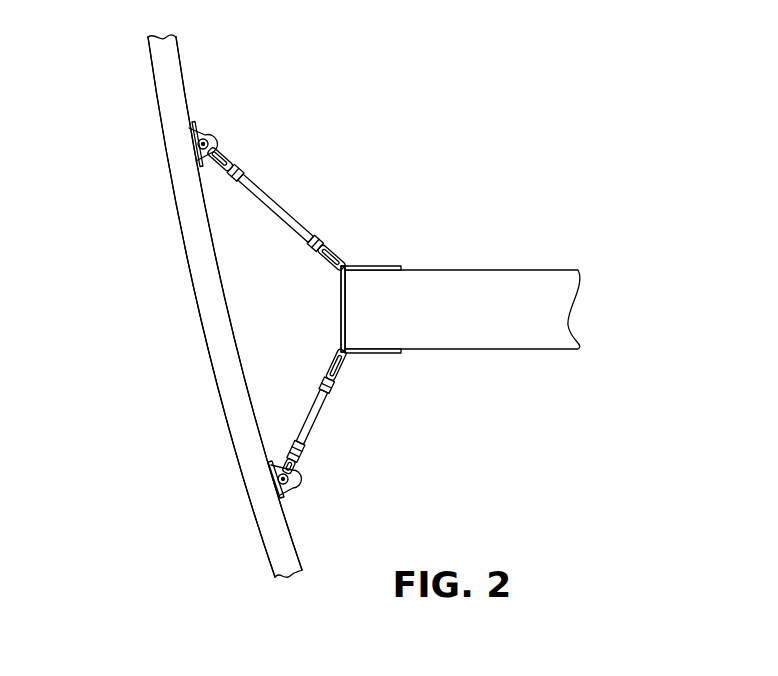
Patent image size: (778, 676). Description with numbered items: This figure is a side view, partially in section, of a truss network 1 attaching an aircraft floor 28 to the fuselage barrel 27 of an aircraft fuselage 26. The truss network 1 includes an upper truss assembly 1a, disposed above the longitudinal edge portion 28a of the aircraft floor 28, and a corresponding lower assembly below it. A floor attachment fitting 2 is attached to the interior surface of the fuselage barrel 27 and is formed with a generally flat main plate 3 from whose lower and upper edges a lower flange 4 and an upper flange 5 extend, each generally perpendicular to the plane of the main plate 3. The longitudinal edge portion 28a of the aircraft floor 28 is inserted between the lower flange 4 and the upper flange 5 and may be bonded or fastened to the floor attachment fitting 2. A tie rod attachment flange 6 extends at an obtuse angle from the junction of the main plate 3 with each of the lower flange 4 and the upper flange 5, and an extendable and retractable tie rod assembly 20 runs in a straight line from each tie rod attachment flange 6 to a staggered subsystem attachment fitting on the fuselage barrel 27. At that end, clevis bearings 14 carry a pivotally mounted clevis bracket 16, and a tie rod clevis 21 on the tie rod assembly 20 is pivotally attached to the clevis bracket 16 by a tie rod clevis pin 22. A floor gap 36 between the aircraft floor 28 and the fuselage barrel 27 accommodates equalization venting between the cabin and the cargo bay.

The truss network 1 is at (361, 107).
The upper truss assembly 1a is at (357, 199).
The floor attachment fitting 2 is at (334, 286).
The main plate 3 is at (357, 308).
The lower flange 4 is at (385, 353).
The upper flange 5 is at (378, 266).
The tie rod attachment flange 6 is at (323, 265).
The clevis bearing 14 is at (190, 130).
The clevis bracket 16 is at (352, 468).
The tie rod assembly 20 is at (280, 200).
The tie rod clevis 21 is at (218, 148).
The tie rod clevis pin 22 is at (198, 140).
The aircraft fuselage 26 is at (141, 67).
The fuselage barrel 27 is at (185, 215).
The aircraft floor 28 is at (503, 270).
The longitudinal edge portion 28a is at (355, 330).
The floor gap 36 is at (234, 289).